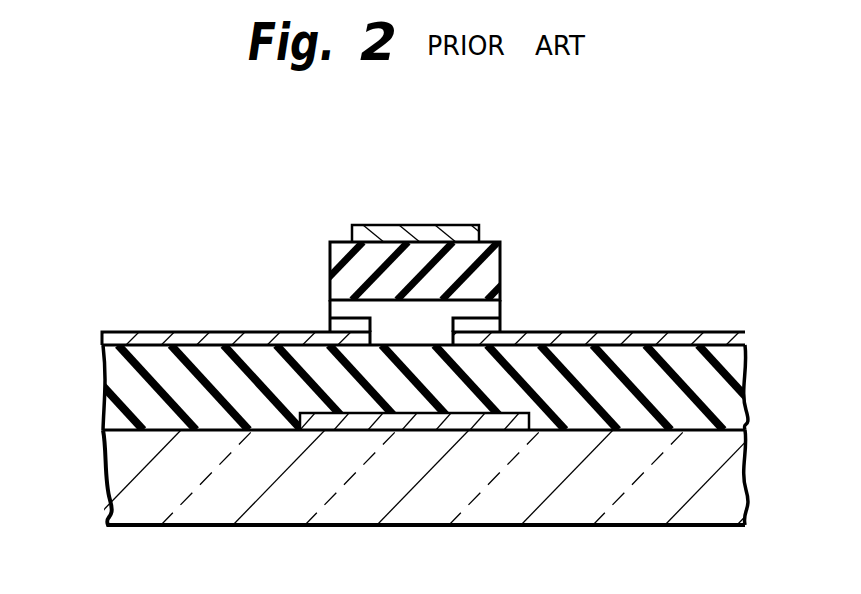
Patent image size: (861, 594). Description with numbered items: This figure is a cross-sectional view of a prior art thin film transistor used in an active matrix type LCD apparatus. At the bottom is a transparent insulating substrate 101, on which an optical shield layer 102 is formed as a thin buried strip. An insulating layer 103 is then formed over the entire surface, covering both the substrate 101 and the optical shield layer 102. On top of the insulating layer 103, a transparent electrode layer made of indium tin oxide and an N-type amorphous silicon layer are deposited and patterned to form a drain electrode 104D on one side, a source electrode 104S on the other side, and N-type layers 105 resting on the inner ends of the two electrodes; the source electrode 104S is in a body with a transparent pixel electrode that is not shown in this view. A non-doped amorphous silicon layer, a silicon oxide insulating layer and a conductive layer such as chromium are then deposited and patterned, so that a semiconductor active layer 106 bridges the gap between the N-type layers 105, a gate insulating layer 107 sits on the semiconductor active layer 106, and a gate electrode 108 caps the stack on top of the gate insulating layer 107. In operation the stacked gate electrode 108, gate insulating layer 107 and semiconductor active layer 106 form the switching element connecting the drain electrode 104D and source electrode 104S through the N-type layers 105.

The transparent insulating substrate 101 is at (713, 472).
The optical shield layer 102 is at (318, 427).
The insulating layer 103 is at (722, 401).
The drain electrode 104D is at (149, 336).
The source electrode 104S is at (686, 338).
The N-type layers 105 is at (338, 323).
The semiconductor active layer 106 is at (390, 316).
The gate insulating layer 107 is at (490, 264).
The gate electrode 108 is at (401, 224).